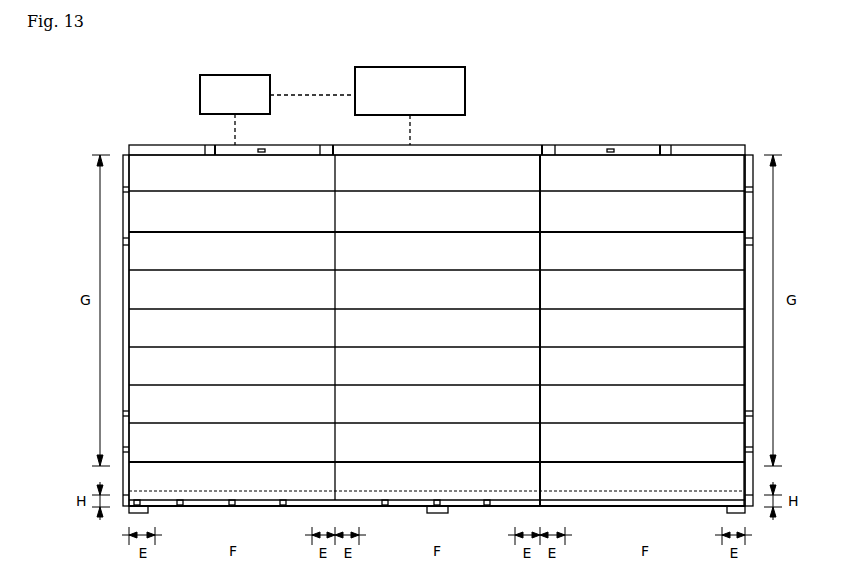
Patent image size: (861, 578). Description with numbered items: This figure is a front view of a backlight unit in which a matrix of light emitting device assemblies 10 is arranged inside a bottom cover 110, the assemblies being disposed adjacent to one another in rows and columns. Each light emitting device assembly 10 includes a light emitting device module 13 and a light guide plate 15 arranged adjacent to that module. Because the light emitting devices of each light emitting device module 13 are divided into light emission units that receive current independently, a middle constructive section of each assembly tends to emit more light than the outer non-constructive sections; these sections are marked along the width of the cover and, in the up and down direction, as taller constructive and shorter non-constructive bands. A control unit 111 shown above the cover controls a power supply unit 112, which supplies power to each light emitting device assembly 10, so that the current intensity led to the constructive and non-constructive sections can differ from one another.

The light emitting device assembly 10 is at (468, 172).
The bottom cover 110 is at (505, 146).
The control unit 111 is at (200, 97).
The power supply unit 112 is at (465, 93).
The light emitting device module 13 is at (746, 436).
The light guide plate 15 is at (725, 403).